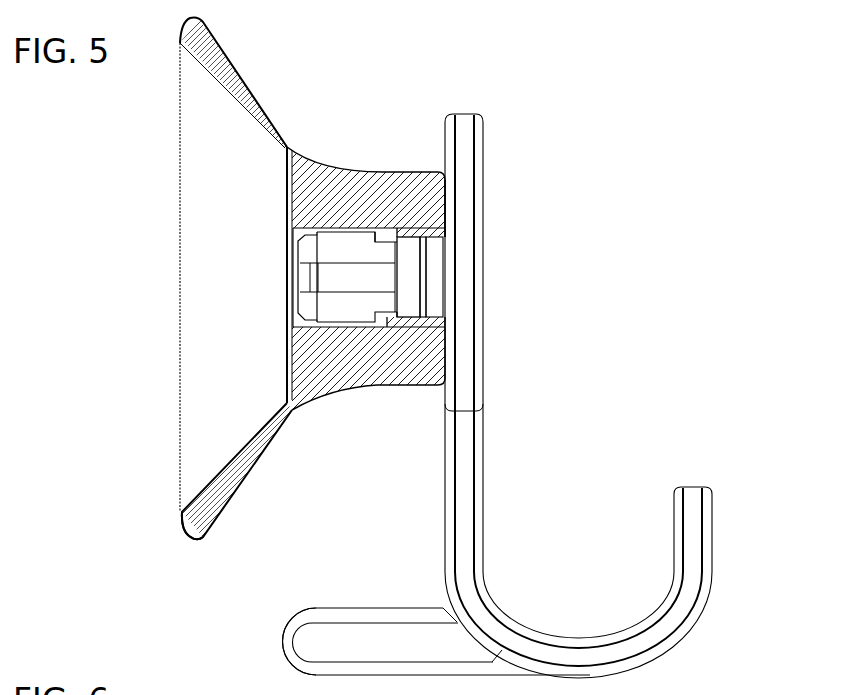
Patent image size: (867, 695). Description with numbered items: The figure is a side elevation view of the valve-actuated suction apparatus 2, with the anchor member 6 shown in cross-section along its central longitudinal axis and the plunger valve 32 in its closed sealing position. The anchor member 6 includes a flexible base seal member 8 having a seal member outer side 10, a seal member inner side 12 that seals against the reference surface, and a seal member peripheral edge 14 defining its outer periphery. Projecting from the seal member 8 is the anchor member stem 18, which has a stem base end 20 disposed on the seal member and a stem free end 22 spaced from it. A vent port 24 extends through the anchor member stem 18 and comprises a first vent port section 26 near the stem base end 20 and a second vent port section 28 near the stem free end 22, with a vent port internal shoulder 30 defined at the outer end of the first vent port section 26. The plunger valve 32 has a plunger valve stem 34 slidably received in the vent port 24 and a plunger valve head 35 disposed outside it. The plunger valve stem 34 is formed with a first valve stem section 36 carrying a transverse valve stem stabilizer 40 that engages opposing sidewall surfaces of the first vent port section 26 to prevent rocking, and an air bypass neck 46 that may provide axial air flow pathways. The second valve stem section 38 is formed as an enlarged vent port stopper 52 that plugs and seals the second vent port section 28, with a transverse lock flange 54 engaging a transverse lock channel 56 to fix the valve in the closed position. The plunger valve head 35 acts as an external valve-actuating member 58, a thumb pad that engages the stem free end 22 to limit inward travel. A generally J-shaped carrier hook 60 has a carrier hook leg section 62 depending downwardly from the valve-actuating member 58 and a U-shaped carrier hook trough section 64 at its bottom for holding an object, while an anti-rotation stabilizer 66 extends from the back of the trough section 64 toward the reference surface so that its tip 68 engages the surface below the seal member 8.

The valve-actuated suction apparatus 2 is at (471, 351).
The anchor member 6 is at (316, 242).
The base seal member 8 is at (189, 309).
The seal member outer side 10 is at (257, 473).
The seal member inner side 12 is at (203, 380).
The seal member peripheral edge 14 is at (187, 533).
The anchor member stem 18 is at (428, 192).
The stem base end 20 is at (287, 190).
The stem free end 22 is at (445, 210).
The vent port 24 is at (277, 275).
The first vent port section 26 is at (293, 355).
The second vent port section 28 is at (407, 318).
The vent port internal shoulder 30 is at (370, 320).
The plunger valve 32 is at (471, 396).
The plunger valve stem 34 is at (388, 228).
The plunger valve head 35 is at (523, 343).
The first valve stem section 36 is at (337, 230).
The second valve stem section 38 is at (407, 230).
The valve stem stabilizer 40 is at (290, 310).
The air bypass neck 46 is at (385, 317).
The vent port stopper 52 is at (433, 265).
The transverse lock flange 54 is at (423, 293).
The transverse lock channel 56 is at (427, 298).
The external valve-actuating member 58 is at (485, 217).
The carrier hook 60 is at (605, 508).
The carrier hook leg section 62 is at (465, 508).
The carrier hook trough section 64 is at (550, 633).
The anti-rotation stabilizer 66 is at (398, 643).
The tip 68 is at (293, 625).